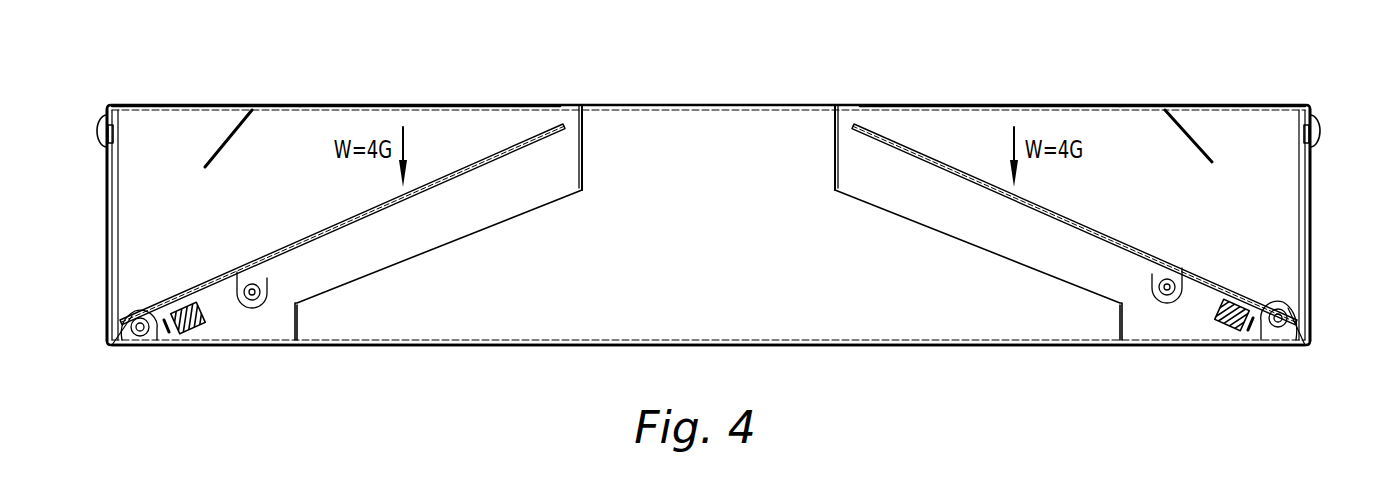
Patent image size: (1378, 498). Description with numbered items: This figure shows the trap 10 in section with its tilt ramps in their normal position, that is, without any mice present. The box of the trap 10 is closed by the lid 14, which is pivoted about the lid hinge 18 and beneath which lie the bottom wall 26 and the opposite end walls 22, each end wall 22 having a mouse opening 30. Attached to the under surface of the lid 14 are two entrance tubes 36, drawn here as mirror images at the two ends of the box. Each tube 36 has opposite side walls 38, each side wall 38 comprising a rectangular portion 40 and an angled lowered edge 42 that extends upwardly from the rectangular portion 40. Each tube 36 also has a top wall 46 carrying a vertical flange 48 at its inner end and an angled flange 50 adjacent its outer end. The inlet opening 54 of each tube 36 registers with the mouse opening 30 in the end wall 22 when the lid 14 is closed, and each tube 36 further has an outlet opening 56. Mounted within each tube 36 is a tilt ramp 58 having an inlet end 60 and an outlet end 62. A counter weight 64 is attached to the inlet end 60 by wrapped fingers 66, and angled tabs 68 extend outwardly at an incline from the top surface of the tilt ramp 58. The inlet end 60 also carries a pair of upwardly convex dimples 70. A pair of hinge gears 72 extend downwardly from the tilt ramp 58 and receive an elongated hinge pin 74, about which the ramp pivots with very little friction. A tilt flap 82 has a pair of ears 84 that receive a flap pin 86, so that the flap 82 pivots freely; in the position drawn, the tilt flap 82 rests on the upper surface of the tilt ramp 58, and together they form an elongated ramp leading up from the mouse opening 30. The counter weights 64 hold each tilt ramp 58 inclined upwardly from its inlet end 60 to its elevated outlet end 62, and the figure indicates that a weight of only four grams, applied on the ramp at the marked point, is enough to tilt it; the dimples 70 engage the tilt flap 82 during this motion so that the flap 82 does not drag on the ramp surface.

The trap 10 is at (843, 80).
The lid 14 is at (648, 105).
The lid hinge 18 is at (97, 131).
The end walls 22 is at (118, 323).
The bottom wall 26 is at (498, 345).
The mouse opening 30 is at (112, 305).
The entrance tubes 36 is at (425, 110).
The side walls 38 is at (258, 112).
The rectangular portion 40 is at (160, 219).
The angled lowered edge 42 is at (560, 198).
The top wall 46 is at (507, 113).
The vertical flange 48 is at (583, 165).
The angled flange 50 is at (233, 135).
The inlet opening 54 is at (120, 218).
The outlet opening 56 is at (473, 223).
The tilt ramp 58 is at (335, 232).
The inlet end 60 is at (203, 304).
The outlet end 62 is at (562, 130).
The counter weight 64 is at (192, 330).
The wrapped fingers 66 is at (180, 335).
The angled tabs 68 is at (158, 337).
The dimples 70 is at (178, 298).
The hinge gears 72 is at (262, 303).
The hinge pin 74 is at (262, 290).
The tilt flap 82 is at (227, 273).
The ears 84 is at (112, 345).
The flap pin 86 is at (135, 318).